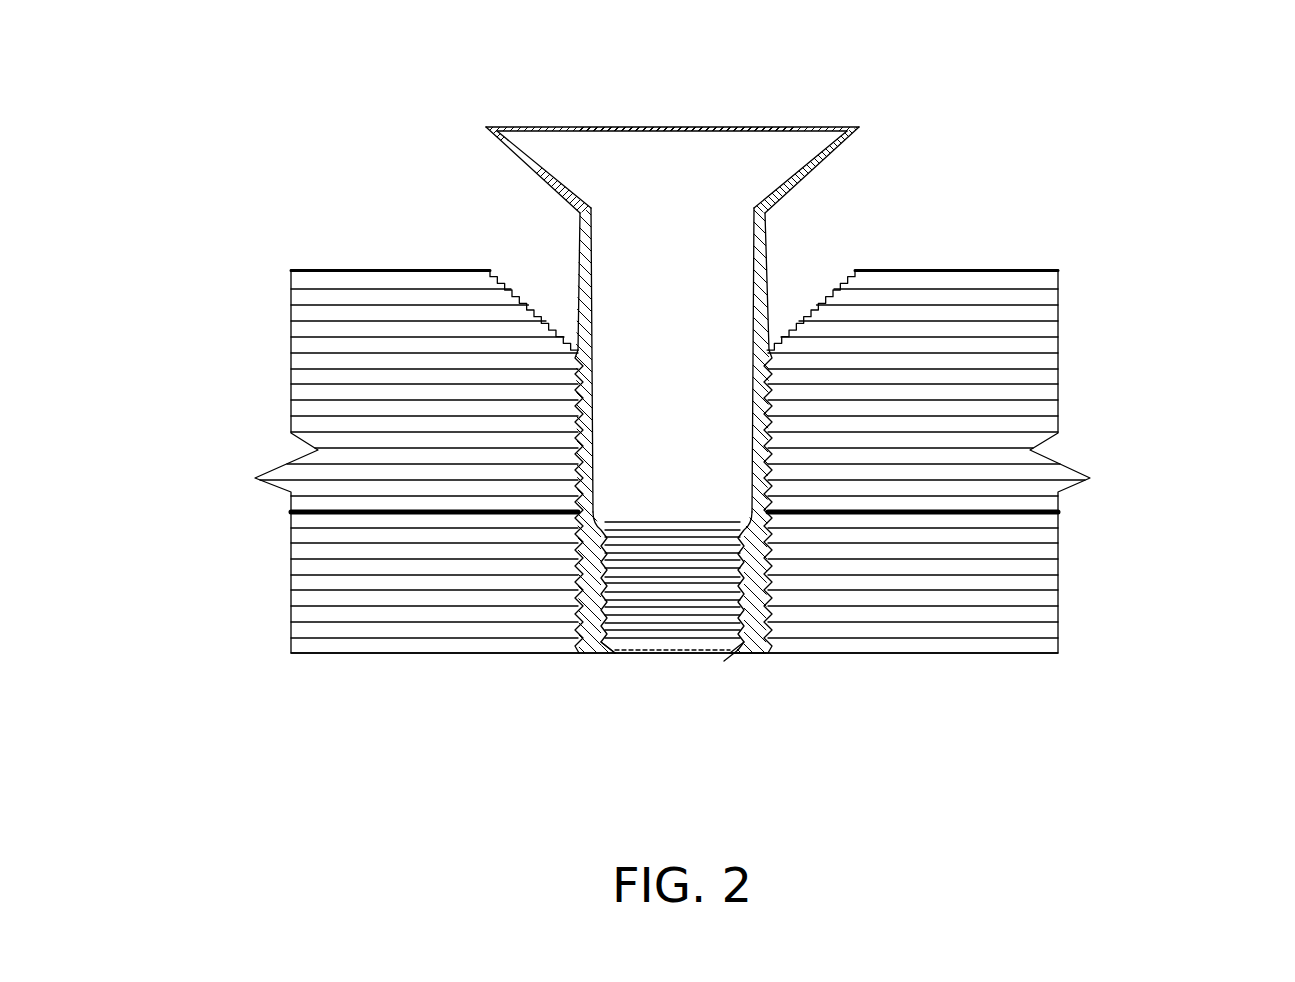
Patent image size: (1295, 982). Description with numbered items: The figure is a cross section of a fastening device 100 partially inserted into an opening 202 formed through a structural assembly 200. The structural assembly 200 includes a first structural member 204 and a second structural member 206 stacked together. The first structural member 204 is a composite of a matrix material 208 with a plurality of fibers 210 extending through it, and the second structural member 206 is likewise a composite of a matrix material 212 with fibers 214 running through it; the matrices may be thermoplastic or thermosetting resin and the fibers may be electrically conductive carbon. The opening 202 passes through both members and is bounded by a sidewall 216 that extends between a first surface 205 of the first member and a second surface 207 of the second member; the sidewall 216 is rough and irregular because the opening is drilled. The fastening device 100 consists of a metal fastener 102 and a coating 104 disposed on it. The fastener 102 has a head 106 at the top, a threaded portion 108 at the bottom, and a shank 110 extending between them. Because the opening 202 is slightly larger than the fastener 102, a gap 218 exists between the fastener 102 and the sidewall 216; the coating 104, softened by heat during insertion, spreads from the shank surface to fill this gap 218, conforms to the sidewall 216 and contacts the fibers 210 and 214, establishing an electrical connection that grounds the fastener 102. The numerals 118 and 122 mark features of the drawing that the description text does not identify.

The fastening device 100 is at (845, 105).
The fastener 102 is at (603, 153).
The coating 104 is at (765, 298).
The head 106 is at (676, 157).
The threaded portion 108 is at (680, 630).
The shank 110 is at (700, 287).
The lower threaded portion 118 is at (577, 573).
The shank wall 122 is at (580, 312).
The structural assembly 200 is at (268, 245).
The opening 202 is at (600, 673).
The first structural member 204 is at (1095, 346).
The first surface 205 is at (947, 270).
The second structural member 206 is at (1115, 581).
The second surface 207 is at (978, 655).
The matrix material 208 is at (317, 330).
The fibers 210 is at (302, 352).
The matrix material 212 is at (1035, 533).
The fibers 214 is at (400, 573).
The sidewall 216 is at (580, 653).
The gap 218 is at (752, 663).